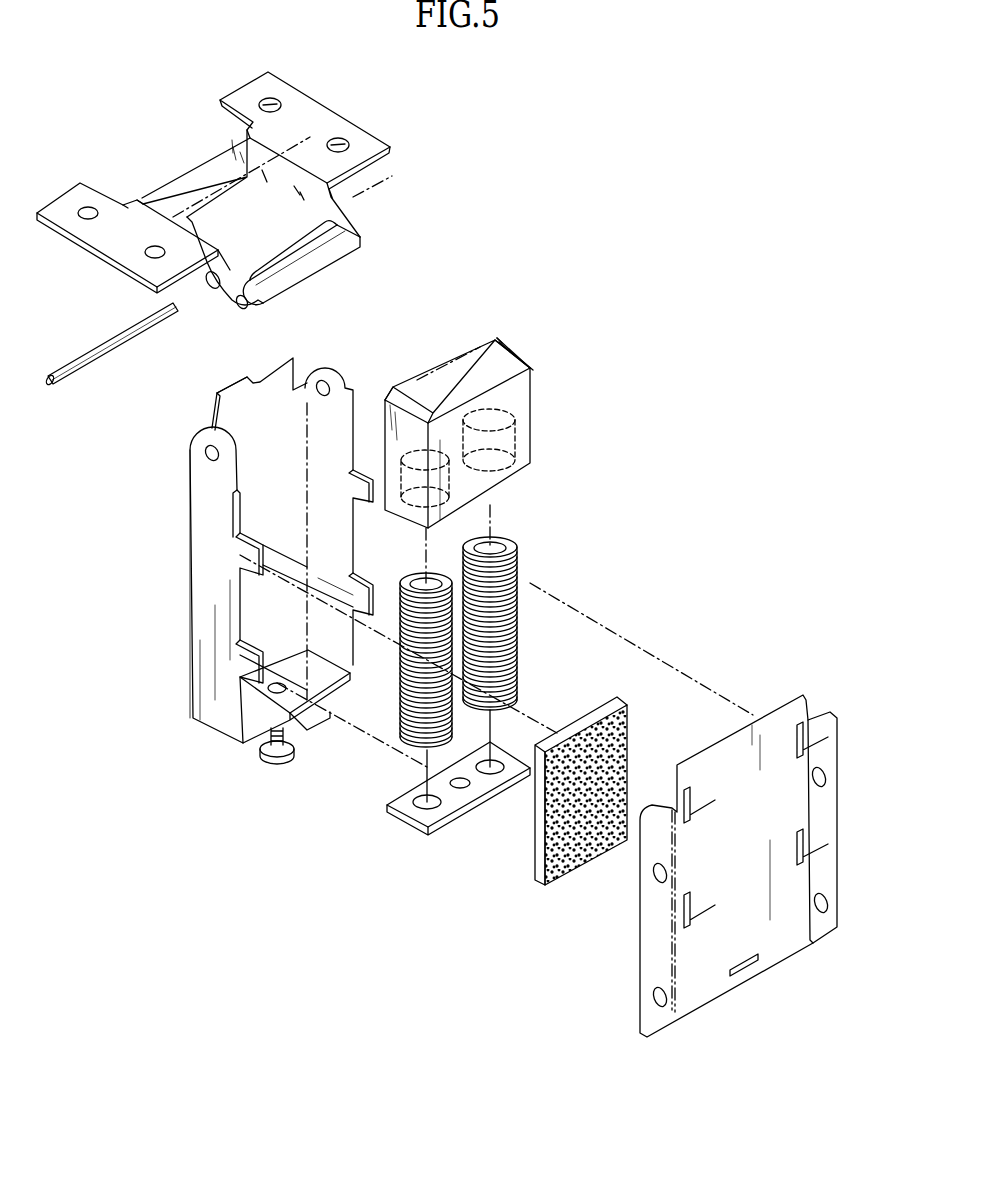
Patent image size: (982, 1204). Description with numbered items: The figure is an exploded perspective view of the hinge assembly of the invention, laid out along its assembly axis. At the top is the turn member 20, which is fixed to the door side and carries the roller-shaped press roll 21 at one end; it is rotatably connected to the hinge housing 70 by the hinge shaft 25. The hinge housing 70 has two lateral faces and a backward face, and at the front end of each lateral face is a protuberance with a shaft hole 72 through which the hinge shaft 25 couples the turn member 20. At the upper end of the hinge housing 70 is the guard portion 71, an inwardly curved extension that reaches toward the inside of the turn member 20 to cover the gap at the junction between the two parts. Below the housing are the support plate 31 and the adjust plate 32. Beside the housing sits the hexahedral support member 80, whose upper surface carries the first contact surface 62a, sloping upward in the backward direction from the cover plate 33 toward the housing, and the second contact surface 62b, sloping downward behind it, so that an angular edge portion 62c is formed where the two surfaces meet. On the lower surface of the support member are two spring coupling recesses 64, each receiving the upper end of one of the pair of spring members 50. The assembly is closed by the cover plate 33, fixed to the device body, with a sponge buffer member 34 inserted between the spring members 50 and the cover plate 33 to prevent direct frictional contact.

The turn member 20 is at (341, 98).
The press roll 21 is at (323, 277).
The hinge shaft 25 is at (108, 337).
The hinge housing 70 is at (177, 543).
The guard portion 71 is at (217, 393).
The shaft hole 72 is at (207, 460).
The support plate 31 is at (258, 748).
The adjust plate 32 is at (415, 817).
The spring holder block 80 is at (532, 387).
The first contact surface 62a is at (500, 353).
The second contact surface 62b is at (427, 368).
The edge portion 62c is at (477, 338).
The spring coupling recess 64 is at (515, 433).
The spring member 50 is at (518, 627).
The buffer member 34 is at (540, 873).
The cover plate 33 is at (828, 795).